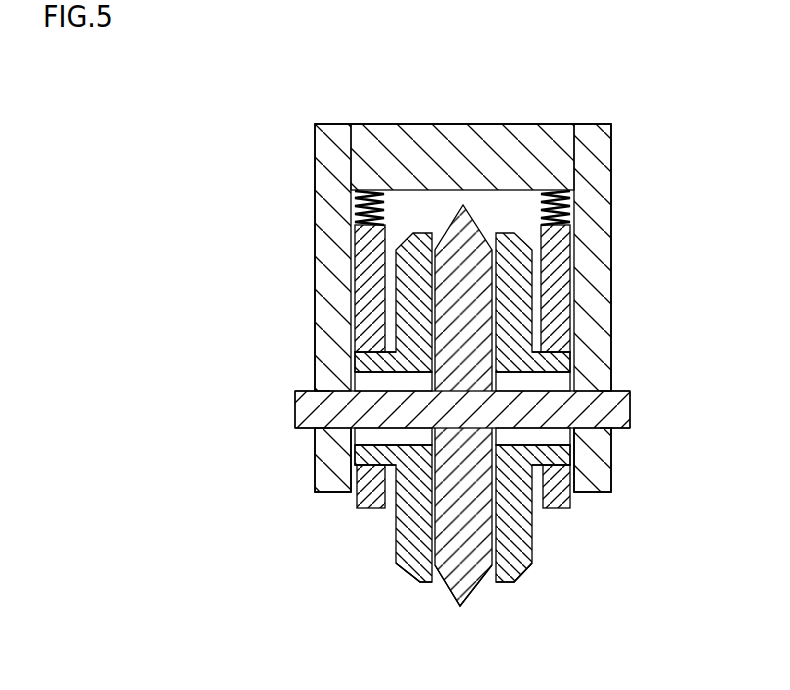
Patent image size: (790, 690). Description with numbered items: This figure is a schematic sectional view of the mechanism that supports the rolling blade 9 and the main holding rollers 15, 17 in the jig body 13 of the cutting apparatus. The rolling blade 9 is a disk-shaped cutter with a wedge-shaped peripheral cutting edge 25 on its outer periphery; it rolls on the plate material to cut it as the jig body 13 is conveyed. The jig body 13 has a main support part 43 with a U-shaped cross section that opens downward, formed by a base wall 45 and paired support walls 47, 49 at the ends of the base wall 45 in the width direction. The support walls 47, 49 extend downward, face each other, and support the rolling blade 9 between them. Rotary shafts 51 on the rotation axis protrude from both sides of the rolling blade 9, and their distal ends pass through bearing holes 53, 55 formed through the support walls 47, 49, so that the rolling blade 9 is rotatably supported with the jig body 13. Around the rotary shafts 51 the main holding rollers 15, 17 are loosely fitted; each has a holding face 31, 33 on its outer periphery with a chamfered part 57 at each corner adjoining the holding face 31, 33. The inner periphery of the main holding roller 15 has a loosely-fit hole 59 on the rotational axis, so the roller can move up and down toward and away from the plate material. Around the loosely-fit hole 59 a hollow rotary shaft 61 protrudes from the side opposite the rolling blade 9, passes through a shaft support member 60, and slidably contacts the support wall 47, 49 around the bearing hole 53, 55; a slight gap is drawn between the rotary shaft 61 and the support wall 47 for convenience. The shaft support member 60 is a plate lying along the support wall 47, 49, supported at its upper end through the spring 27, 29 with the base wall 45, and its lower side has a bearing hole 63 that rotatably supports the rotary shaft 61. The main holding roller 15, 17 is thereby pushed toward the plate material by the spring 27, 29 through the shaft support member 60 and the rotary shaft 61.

The rolling blade 9 is at (483, 236).
The jig body 13 is at (602, 107).
The main holding roller 15 is at (400, 545).
The main holding roller 17 is at (532, 547).
The cutting edge 25 is at (460, 606).
The spring 27 is at (352, 205).
The spring 29 is at (572, 205).
The holding face 31 is at (417, 578).
The holding face 33 is at (505, 580).
The main support part 43 is at (617, 160).
The base wall 45 is at (400, 124).
The support wall 47 is at (320, 233).
The support wall 49 is at (596, 243).
The rotary shaft 51 is at (631, 413).
The bearing hole 53 is at (330, 395).
The bearing hole 55 is at (632, 392).
The chamfered part 57 is at (403, 568).
The loosely-fit hole 59 is at (355, 378).
The shaft support member 60 is at (355, 294).
The hollow rotary shaft 61 is at (365, 457).
The bearing hole 63 is at (360, 356).